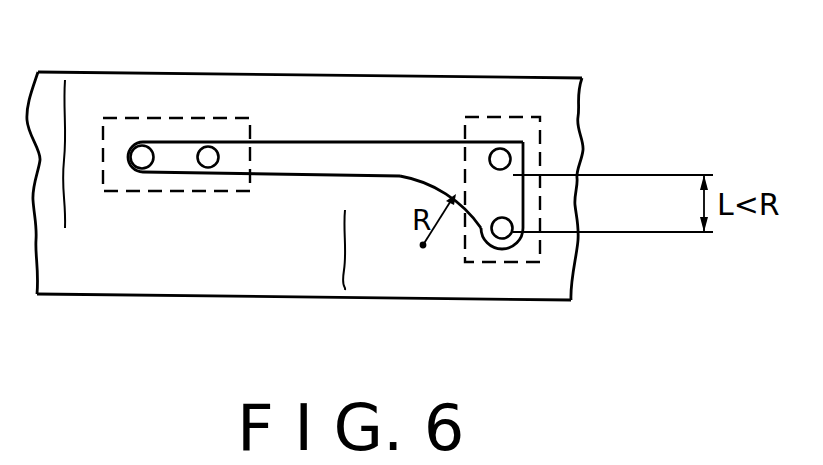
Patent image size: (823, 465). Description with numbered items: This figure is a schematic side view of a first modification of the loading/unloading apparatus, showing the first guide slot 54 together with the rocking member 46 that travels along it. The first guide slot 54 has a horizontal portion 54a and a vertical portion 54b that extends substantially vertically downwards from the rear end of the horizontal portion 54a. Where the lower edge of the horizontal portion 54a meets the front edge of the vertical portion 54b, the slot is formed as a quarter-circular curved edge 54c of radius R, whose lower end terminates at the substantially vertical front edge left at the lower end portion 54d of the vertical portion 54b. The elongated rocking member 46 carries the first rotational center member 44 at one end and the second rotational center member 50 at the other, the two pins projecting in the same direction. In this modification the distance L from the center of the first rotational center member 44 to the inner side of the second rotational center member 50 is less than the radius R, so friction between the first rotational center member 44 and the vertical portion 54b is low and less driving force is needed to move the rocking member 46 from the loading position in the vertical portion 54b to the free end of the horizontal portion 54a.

The first rotational center member 44 is at (209, 145).
The rocking member 46 is at (176, 198).
The second rotational center member 50 is at (141, 145).
The first guide slot 54 is at (393, 186).
The horizontal portion 54a is at (284, 173).
The vertical portion 54b is at (511, 193).
The curved edge 54c is at (428, 177).
The lower end portion 54d is at (484, 231).